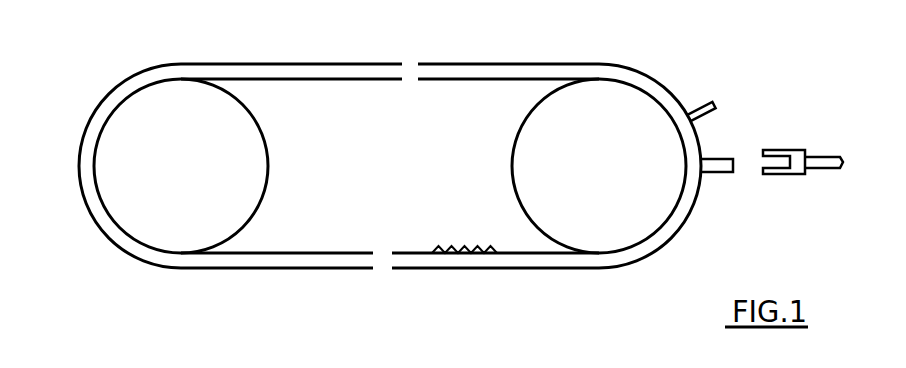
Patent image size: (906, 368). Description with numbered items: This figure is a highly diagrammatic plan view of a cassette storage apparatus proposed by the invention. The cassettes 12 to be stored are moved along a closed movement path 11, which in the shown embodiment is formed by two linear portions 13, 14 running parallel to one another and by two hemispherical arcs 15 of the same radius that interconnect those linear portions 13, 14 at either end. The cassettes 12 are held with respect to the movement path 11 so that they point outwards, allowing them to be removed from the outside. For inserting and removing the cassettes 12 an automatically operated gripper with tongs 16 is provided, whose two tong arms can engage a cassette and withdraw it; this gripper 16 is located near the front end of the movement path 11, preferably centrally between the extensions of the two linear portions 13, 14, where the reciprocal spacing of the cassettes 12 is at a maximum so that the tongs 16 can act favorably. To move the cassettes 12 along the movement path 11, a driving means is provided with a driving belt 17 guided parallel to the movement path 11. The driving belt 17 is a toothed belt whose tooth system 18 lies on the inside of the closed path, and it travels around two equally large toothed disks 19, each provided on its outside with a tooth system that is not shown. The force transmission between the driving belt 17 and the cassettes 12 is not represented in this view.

The movement path 11 is at (457, 58).
The cassette 12 is at (693, 108).
The linear portion 13 is at (450, 268).
The linear portion 14 is at (293, 63).
The hemispherical arc 15 is at (91, 212).
The gripper with tongs 16 is at (815, 159).
The driving belt 17 is at (277, 242).
The tooth system 18 is at (471, 246).
The toothed disk 19 is at (242, 135).